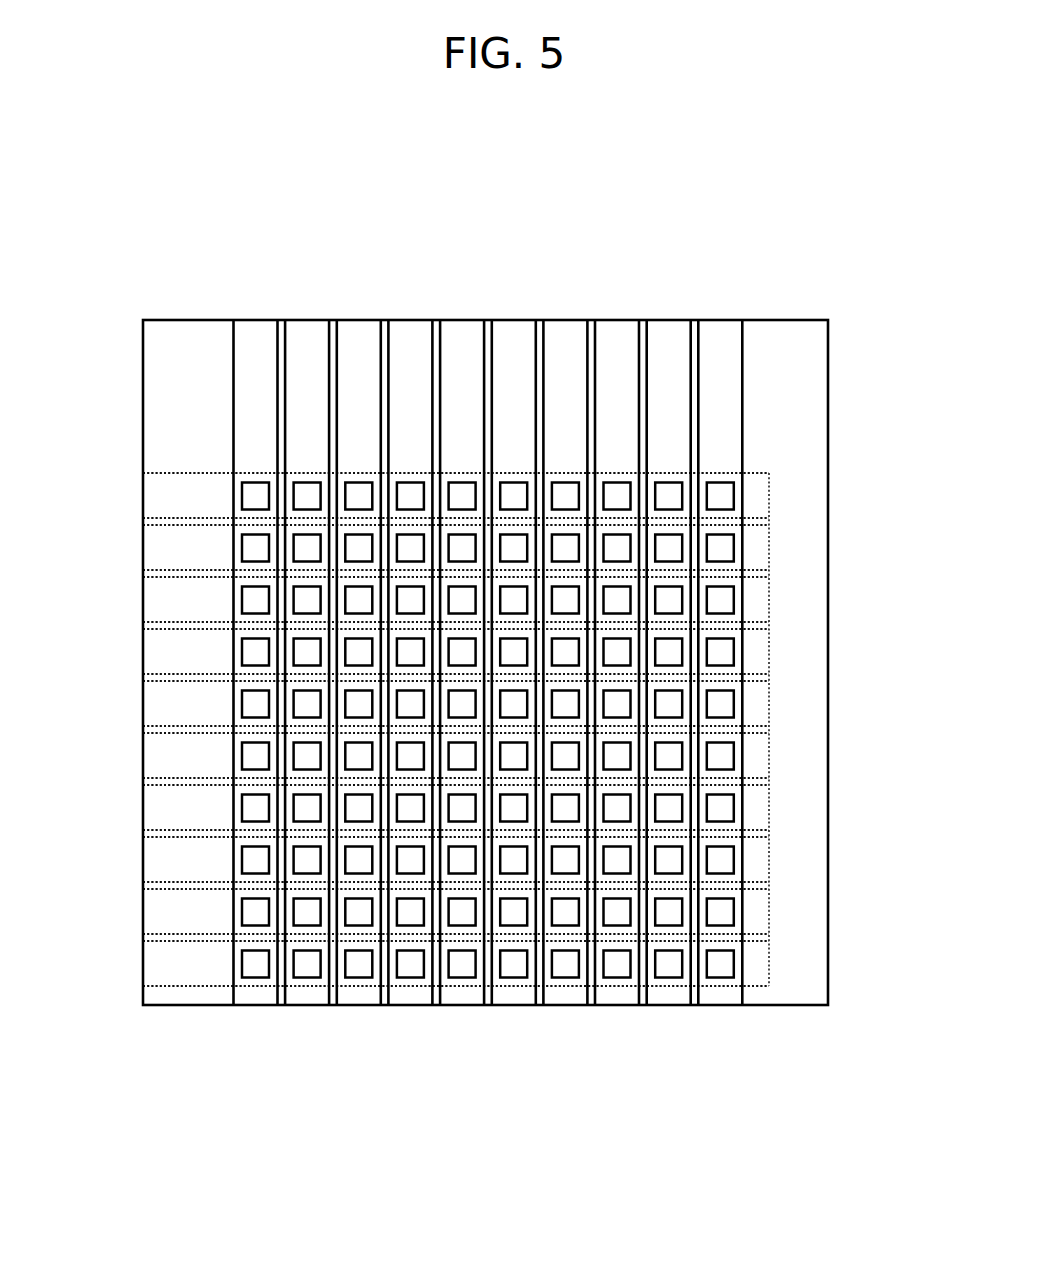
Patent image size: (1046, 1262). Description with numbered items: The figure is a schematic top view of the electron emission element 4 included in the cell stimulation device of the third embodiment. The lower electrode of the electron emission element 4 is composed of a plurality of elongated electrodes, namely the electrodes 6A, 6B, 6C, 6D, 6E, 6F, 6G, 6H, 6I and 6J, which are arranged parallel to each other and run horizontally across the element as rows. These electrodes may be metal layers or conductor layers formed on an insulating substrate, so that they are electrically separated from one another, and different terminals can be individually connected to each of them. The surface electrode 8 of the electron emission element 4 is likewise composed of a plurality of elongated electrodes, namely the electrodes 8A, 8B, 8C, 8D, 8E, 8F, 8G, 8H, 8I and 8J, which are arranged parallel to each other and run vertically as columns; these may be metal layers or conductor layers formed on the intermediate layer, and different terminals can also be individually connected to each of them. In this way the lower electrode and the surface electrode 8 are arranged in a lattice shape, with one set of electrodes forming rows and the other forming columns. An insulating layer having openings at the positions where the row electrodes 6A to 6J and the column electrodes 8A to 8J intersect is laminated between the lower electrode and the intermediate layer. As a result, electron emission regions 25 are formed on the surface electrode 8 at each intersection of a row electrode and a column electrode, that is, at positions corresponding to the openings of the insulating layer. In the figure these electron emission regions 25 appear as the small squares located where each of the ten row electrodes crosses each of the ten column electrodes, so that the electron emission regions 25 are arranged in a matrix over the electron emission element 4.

The electron emission element 4 is at (826, 287).
The electrode 6A is at (163, 497).
The electrode 6B is at (163, 549).
The electrode 6C is at (163, 601).
The electrode 6D is at (163, 653).
The electrode 6E is at (163, 705).
The electrode 6F is at (163, 757).
The electrode 6G is at (163, 809).
The electrode 6H is at (163, 861).
The electrode 6I is at (163, 913).
The electrode 6J is at (163, 965).
The surface electrode 8 is at (488, 623).
The electrode 8A is at (253, 340).
The electrode 8B is at (304, 340).
The electrode 8C is at (356, 340).
The electrode 8D is at (408, 340).
The electrode 8E is at (460, 340).
The electrode 8F is at (512, 340).
The electrode 8G is at (564, 340).
The electrode 8H is at (615, 340).
The electrode 8I is at (667, 340).
The electrode 8J is at (719, 340).
The electron emission region 25 is at (718, 500).